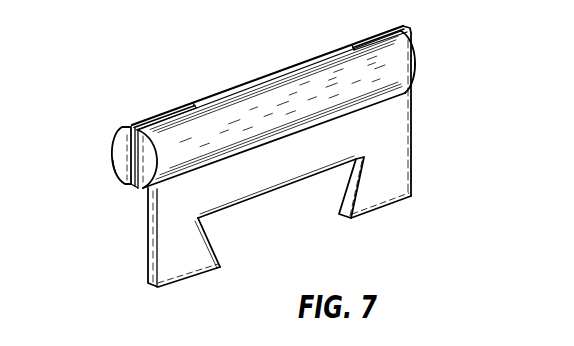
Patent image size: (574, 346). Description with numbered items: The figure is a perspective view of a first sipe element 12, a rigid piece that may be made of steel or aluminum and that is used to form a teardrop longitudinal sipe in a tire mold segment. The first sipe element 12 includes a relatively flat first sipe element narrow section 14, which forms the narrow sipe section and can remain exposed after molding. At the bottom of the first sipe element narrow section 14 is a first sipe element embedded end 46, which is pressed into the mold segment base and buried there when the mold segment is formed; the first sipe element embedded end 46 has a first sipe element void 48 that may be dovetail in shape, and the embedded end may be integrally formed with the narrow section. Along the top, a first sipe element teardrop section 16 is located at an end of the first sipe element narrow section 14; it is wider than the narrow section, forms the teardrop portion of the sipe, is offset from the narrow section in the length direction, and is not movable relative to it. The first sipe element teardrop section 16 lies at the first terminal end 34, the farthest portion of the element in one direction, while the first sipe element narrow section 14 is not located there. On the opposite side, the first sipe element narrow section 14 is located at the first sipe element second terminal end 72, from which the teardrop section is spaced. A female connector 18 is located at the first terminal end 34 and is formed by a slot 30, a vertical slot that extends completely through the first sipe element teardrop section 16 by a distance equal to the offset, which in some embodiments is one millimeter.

The first sipe element 12 is at (261, 171).
The first sipe element narrow section 14 is at (311, 172).
The first sipe element teardrop section 16 is at (255, 88).
The female connector 18 is at (120, 145).
The slot 30 is at (133, 187).
The first terminal end 34 is at (104, 173).
The first sipe element embedded end 46 is at (177, 250).
The first sipe element void 48 is at (295, 218).
The first sipe element second terminal end 72 is at (419, 109).